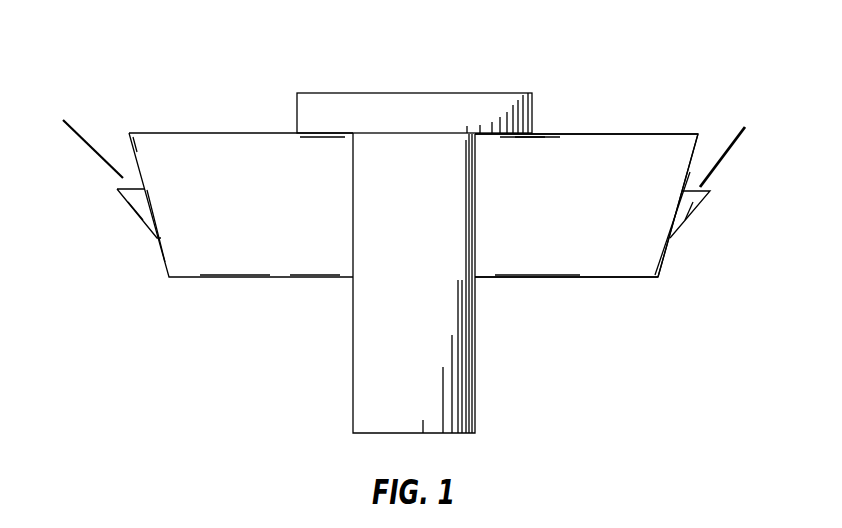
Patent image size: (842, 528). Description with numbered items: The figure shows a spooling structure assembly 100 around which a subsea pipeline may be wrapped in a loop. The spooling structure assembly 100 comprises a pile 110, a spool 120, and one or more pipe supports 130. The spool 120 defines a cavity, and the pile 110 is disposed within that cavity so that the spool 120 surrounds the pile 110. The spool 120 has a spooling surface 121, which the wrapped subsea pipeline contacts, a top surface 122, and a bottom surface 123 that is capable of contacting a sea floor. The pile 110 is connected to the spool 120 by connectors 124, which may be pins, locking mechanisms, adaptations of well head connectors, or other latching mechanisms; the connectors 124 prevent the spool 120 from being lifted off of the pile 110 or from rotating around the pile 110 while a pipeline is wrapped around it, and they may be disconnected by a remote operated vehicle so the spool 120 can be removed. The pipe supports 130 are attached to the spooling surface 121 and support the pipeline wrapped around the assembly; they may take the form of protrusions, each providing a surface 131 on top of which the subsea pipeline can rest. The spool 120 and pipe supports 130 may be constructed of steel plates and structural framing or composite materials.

The spooling structure assembly 100 is at (144, 48).
The pile 110 is at (473, 360).
The spool 120 is at (658, 278).
The spooling surface 121 is at (693, 152).
The top surface 122 is at (603, 134).
The bottom surface 123 is at (565, 278).
The connectors 124 is at (413, 93).
The pipe support 130 is at (135, 213).
The surface 131 is at (402, 127).